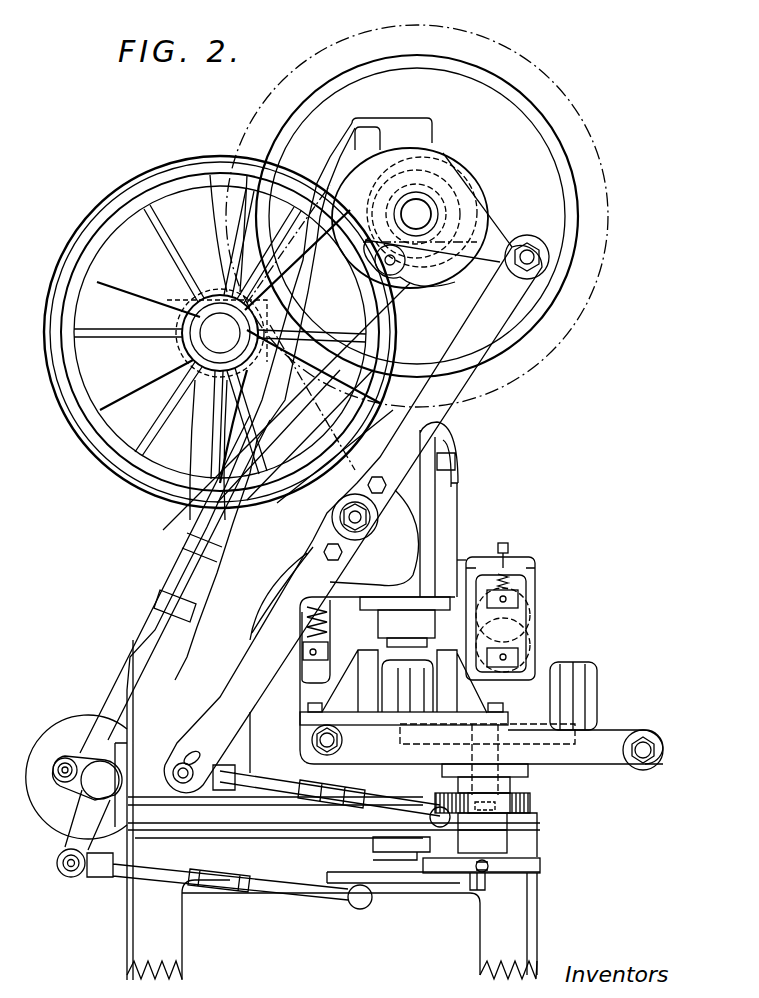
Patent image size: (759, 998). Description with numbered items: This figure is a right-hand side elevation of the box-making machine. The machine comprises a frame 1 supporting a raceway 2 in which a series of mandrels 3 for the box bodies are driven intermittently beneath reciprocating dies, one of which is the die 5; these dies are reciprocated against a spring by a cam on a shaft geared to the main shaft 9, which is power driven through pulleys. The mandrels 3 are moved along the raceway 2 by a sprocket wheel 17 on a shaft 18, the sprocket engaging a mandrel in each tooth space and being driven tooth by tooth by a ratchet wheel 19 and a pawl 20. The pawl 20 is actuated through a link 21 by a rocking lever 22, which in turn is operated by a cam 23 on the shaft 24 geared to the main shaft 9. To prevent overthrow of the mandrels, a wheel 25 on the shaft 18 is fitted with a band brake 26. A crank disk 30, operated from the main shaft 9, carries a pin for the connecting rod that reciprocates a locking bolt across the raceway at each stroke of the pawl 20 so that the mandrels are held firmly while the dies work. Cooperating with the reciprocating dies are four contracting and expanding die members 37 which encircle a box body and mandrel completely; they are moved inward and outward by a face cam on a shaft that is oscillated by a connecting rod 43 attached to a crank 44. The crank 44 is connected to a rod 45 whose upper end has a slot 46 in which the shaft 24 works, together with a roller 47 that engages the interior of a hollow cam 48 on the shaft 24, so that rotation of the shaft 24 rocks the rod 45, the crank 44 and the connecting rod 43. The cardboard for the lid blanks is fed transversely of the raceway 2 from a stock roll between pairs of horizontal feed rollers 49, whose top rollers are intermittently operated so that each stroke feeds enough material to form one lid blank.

The frame 1 is at (273, 549).
The raceway 2 is at (600, 742).
The mandrel 3 is at (582, 672).
The reciprocating die 5 is at (405, 622).
The main shaft 9 is at (220, 332).
The sprocket wheel 17 is at (520, 737).
The shaft 18 is at (488, 785).
The ratchet wheel 19 is at (522, 805).
The pawl 20 is at (483, 812).
The link 21 is at (275, 795).
The rocking lever 22 is at (237, 690).
The cam 23 is at (487, 233).
The shaft 24 is at (417, 213).
The wheel 25 is at (537, 860).
The band brake 26 is at (530, 867).
The crank disk 30 is at (60, 830).
The die member 37 is at (447, 710).
The connecting rod 43 is at (300, 890).
The crank 44 is at (85, 815).
The rod 45 is at (120, 677).
The slot 46 is at (450, 187).
The roller 47 is at (397, 267).
The hollow cam 48 is at (470, 200).
The feed rollers 49 is at (503, 645).